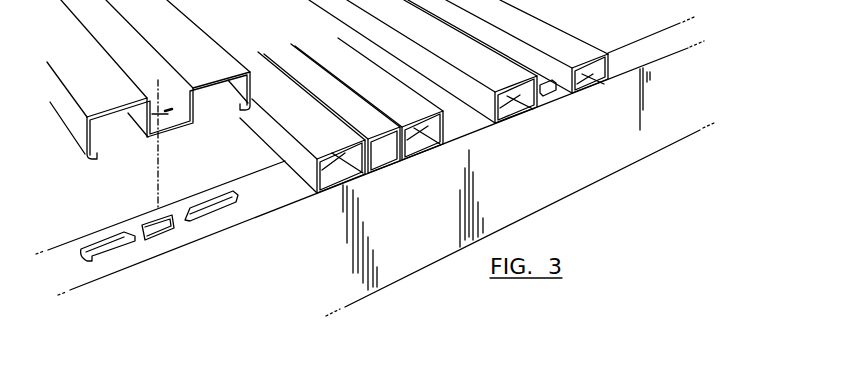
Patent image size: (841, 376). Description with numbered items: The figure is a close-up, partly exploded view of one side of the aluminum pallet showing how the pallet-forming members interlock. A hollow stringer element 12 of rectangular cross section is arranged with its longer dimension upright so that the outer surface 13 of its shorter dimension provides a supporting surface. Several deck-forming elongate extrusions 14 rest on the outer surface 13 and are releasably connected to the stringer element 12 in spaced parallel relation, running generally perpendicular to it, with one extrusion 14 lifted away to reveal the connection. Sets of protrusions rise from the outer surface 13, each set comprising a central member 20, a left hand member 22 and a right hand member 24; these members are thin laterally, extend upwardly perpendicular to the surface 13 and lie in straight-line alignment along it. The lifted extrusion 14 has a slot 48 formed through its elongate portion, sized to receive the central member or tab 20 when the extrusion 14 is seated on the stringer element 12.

The stringer element 12 is at (556, 194).
The outer surface 13 is at (253, 188).
The deck-forming elongate extrusion 14 is at (183, 46).
The central member 20 is at (153, 218).
The left hand member 22 is at (98, 239).
The right hand member 24 is at (197, 207).
The slot 48 is at (168, 113).